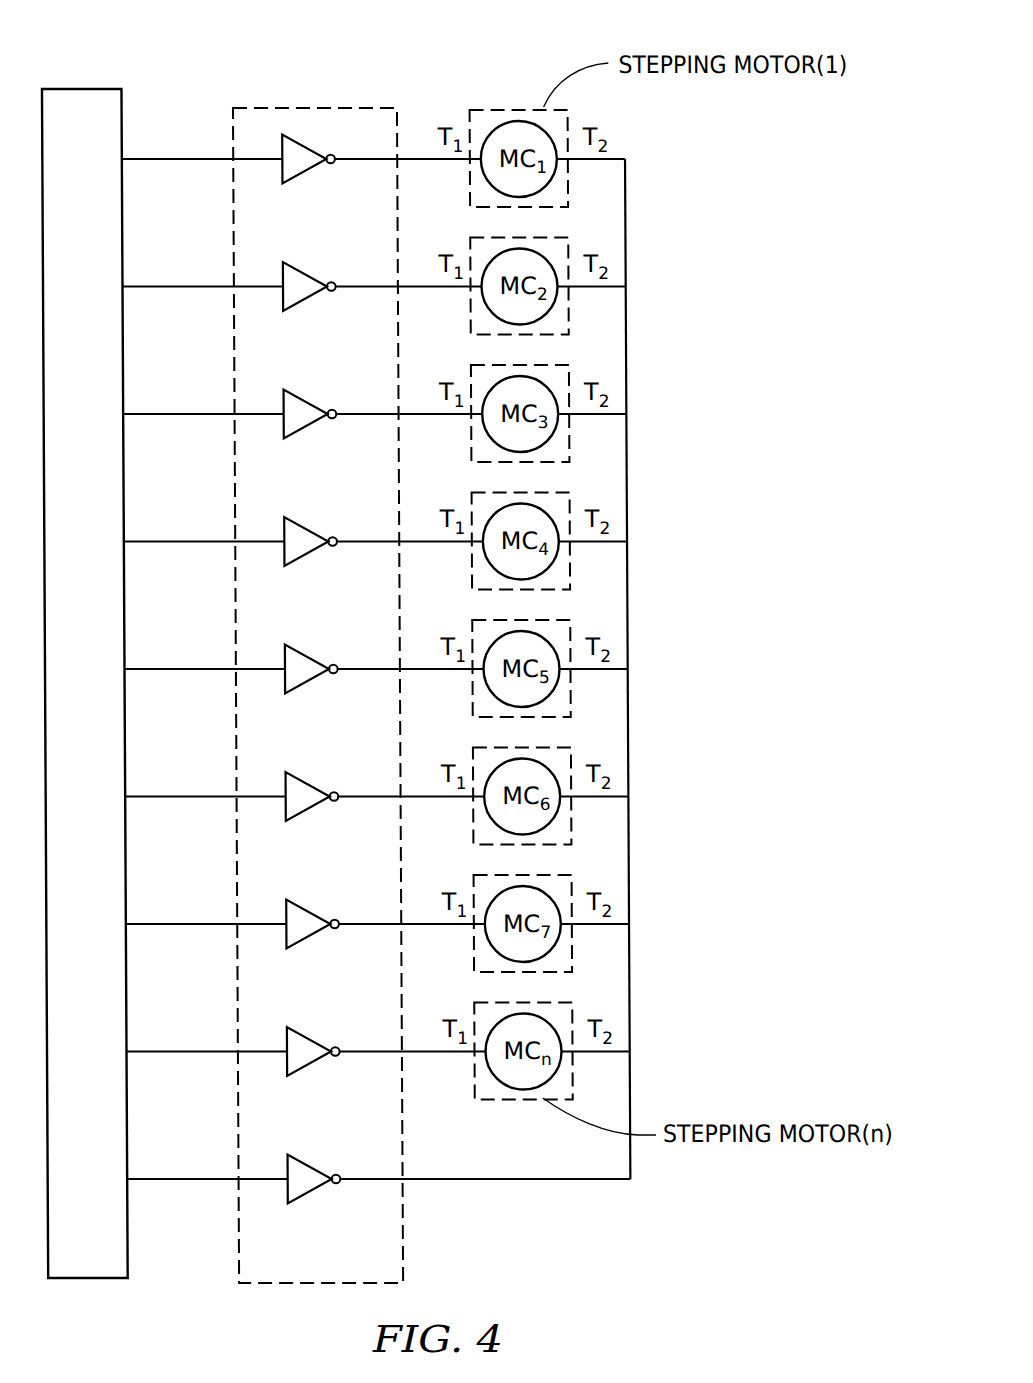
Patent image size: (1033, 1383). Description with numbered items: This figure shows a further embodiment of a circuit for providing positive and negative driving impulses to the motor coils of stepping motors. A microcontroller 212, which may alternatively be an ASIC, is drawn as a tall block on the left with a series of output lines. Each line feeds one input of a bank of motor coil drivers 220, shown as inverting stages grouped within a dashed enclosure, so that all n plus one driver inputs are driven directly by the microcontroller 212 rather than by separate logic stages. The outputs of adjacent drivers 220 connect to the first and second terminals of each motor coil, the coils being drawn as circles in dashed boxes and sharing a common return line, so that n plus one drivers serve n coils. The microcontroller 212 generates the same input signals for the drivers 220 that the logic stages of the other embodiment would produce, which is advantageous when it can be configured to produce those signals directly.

The microcontroller 212 is at (83, 88).
The motor coil drivers 220 is at (325, 107).